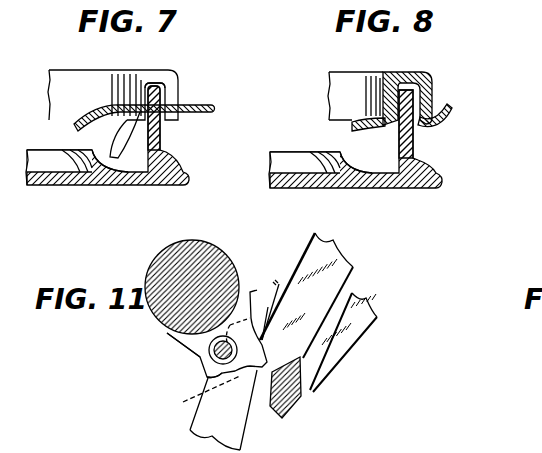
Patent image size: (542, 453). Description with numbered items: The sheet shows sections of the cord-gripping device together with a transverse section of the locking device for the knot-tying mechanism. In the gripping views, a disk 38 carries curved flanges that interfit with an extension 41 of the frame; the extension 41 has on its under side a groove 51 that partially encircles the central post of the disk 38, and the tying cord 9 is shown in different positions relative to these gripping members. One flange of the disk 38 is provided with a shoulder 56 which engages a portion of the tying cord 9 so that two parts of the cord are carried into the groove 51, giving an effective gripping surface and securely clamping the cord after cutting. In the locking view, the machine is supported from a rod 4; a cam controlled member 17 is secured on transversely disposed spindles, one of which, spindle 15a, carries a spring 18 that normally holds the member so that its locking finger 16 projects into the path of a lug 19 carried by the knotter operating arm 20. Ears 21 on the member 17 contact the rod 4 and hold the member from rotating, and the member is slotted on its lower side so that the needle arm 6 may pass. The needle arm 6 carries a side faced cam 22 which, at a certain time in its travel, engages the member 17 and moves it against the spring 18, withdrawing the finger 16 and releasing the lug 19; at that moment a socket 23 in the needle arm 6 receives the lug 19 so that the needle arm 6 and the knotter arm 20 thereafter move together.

In FIG. 11, the rod 4 is at (197, 255).
In FIG. 11, the needle arm 6 is at (306, 295).
In FIG. 7, the tying cord 9 is at (204, 106).
In FIG. 8, the tying cord 9 is at (372, 128).
In FIG. 11, the spindle 15a is at (208, 377).
In FIG. 11, the locking finger 16 is at (330, 342).
In FIG. 11, the cam controlled member 17 is at (209, 357).
In FIG. 11, the spring 18 is at (196, 356).
In FIG. 11, the lug 19 is at (260, 380).
In FIG. 11, the knotter operating arm 20 is at (296, 402).
In FIG. 11, the ears 21 is at (250, 293).
In FIG. 11, the side faced cam 22 is at (268, 307).
In FIG. 11, the socket 23 is at (199, 395).
In FIG. 7, the disk 38 is at (118, 174).
In FIG. 8, the disk 38 is at (376, 178).
In FIG. 7, the extension 41 is at (113, 95).
In FIG. 8, the extension 41 is at (355, 96).
In FIG. 7, the groove 51 is at (163, 83).
In FIG. 8, the groove 51 is at (425, 81).
In FIG. 7, the shoulder 56 is at (163, 118).
In FIG. 8, the shoulder 56 is at (417, 135).